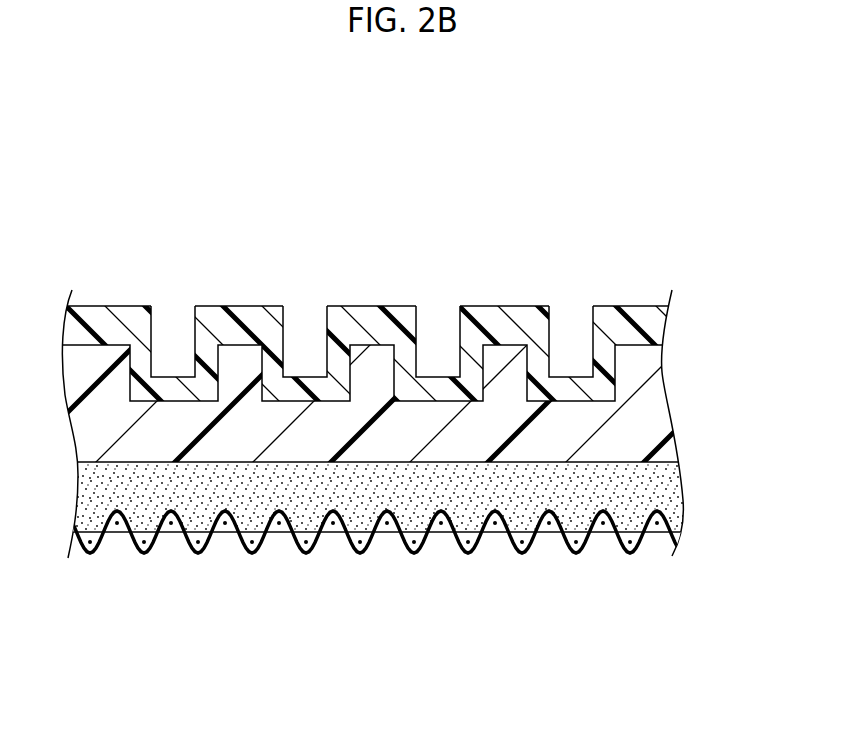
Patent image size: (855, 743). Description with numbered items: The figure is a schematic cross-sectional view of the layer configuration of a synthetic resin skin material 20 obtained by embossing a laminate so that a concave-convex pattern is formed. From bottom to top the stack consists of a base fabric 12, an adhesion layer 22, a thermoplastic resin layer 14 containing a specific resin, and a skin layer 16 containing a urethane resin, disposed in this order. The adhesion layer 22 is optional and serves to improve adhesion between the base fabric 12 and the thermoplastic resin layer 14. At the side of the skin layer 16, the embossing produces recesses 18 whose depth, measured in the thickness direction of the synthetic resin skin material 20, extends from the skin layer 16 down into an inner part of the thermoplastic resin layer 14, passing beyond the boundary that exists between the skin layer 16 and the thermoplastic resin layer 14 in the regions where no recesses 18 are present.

The base fabric 12 is at (577, 554).
The thermoplastic resin layer 14 is at (650, 403).
The skin layer 16 is at (523, 318).
The recesses 18 is at (173, 306).
The synthetic resin skin material 20 is at (391, 252).
The adhesion layer 22 is at (648, 487).